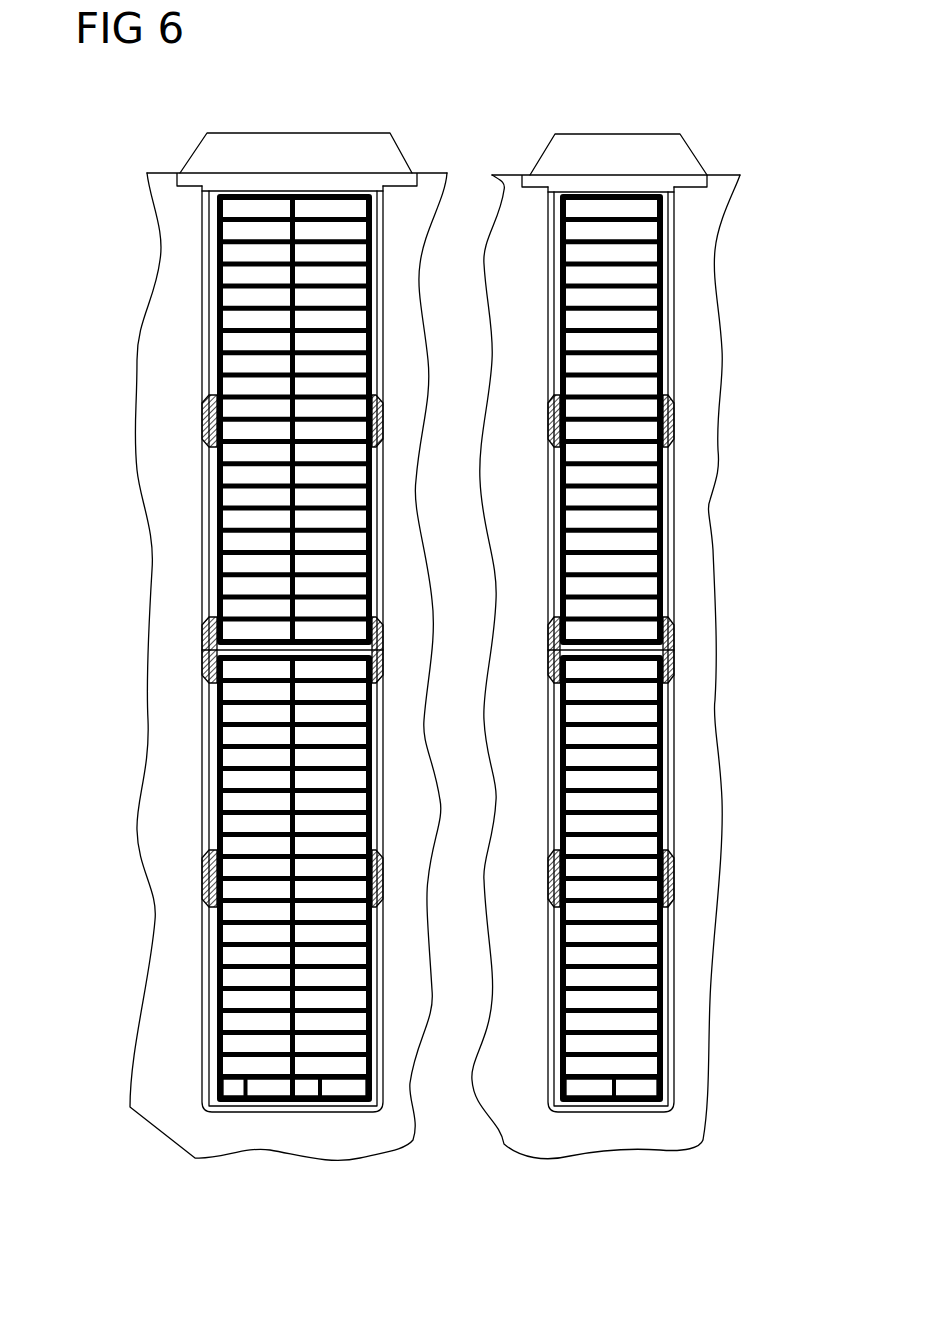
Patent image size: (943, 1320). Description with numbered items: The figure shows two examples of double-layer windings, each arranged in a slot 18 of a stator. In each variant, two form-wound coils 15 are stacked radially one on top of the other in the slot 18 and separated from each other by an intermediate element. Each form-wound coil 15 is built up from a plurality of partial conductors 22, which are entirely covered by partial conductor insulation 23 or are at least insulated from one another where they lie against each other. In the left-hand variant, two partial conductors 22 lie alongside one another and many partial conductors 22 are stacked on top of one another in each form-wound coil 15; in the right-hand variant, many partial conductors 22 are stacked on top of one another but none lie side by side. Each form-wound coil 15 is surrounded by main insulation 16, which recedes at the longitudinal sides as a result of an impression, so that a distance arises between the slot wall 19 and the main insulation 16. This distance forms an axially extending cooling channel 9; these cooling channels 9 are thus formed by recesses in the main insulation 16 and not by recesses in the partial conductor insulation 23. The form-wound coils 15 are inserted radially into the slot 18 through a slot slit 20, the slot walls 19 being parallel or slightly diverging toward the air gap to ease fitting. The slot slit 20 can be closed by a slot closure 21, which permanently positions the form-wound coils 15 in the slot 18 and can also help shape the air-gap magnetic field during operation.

The cooling channel 9 is at (205, 280).
The form-wound coil 15 is at (206, 337).
The main insulation 16 is at (206, 510).
The slot 18 is at (443, 182).
The slot wall 19 is at (206, 468).
The slot slit 20 is at (326, 114).
The slot closure 21 is at (238, 148).
The partial conductor 22 is at (237, 735).
The partial conductor insulation 23 is at (245, 1107).